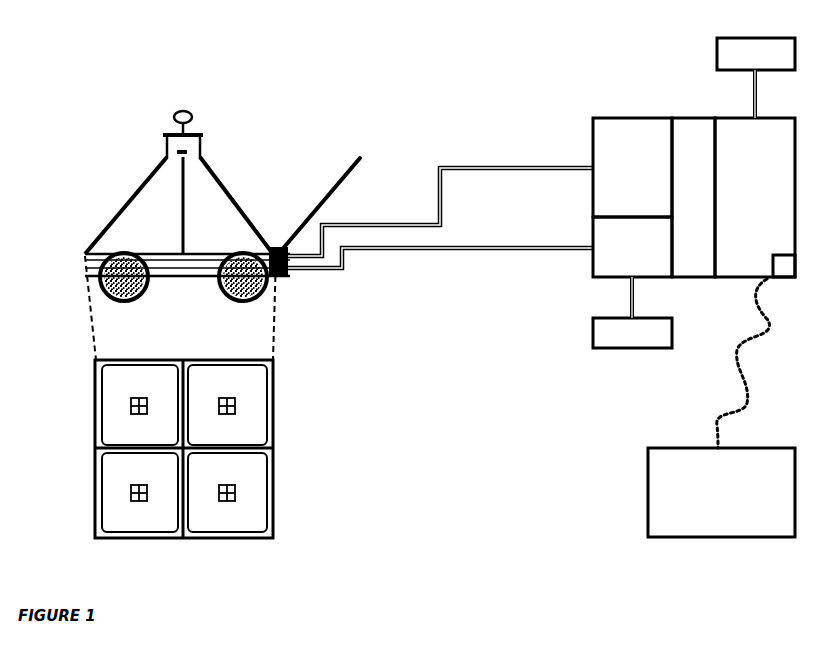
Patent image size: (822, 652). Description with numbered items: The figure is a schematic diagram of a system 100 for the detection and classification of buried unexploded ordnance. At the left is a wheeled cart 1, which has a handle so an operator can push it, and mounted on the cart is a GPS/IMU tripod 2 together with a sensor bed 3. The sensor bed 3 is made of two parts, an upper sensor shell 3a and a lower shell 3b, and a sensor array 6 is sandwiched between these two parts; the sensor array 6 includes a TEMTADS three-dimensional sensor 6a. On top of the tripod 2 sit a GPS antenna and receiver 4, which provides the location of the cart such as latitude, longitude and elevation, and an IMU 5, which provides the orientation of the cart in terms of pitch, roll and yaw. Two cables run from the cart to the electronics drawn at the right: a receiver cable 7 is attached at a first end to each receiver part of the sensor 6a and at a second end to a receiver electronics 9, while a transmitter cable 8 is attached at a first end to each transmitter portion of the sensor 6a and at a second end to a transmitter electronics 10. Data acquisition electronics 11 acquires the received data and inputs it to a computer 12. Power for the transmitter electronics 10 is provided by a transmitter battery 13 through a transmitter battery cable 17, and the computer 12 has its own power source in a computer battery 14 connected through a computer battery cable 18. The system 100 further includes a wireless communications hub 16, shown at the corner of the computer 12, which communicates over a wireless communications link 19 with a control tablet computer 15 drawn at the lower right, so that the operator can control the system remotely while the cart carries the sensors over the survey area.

The system 100 is at (371, 70).
The wheeled cart 1 is at (344, 170).
The GPS/IMU tripod 2 is at (222, 176).
The sensor bed 3 is at (168, 295).
The upper sensor shell 3a is at (170, 254).
The lower shell 3b is at (158, 278).
The GPS antenna and receiver 4 is at (178, 113).
The IMU 5 is at (176, 152).
The sensor array 6 is at (158, 449).
The TEMTADS/3D sensor 6a is at (159, 405).
The receiver cable 7 is at (480, 166).
The transmitter cable 8 is at (480, 251).
The receiver electronics 9 is at (632, 167).
The transmitter electronics 10 is at (632, 247).
The data acquisition electronics 11 is at (693, 197).
The computer 12 is at (755, 197).
The transmitter battery 13 is at (632, 333).
The computer battery 14 is at (756, 54).
The control tablet computer 15 is at (721, 492).
The wireless communications hub 16 is at (792, 279).
The transmitter battery cable 17 is at (630, 305).
The computer battery cable 18 is at (753, 101).
The wireless communications link 19 is at (746, 372).